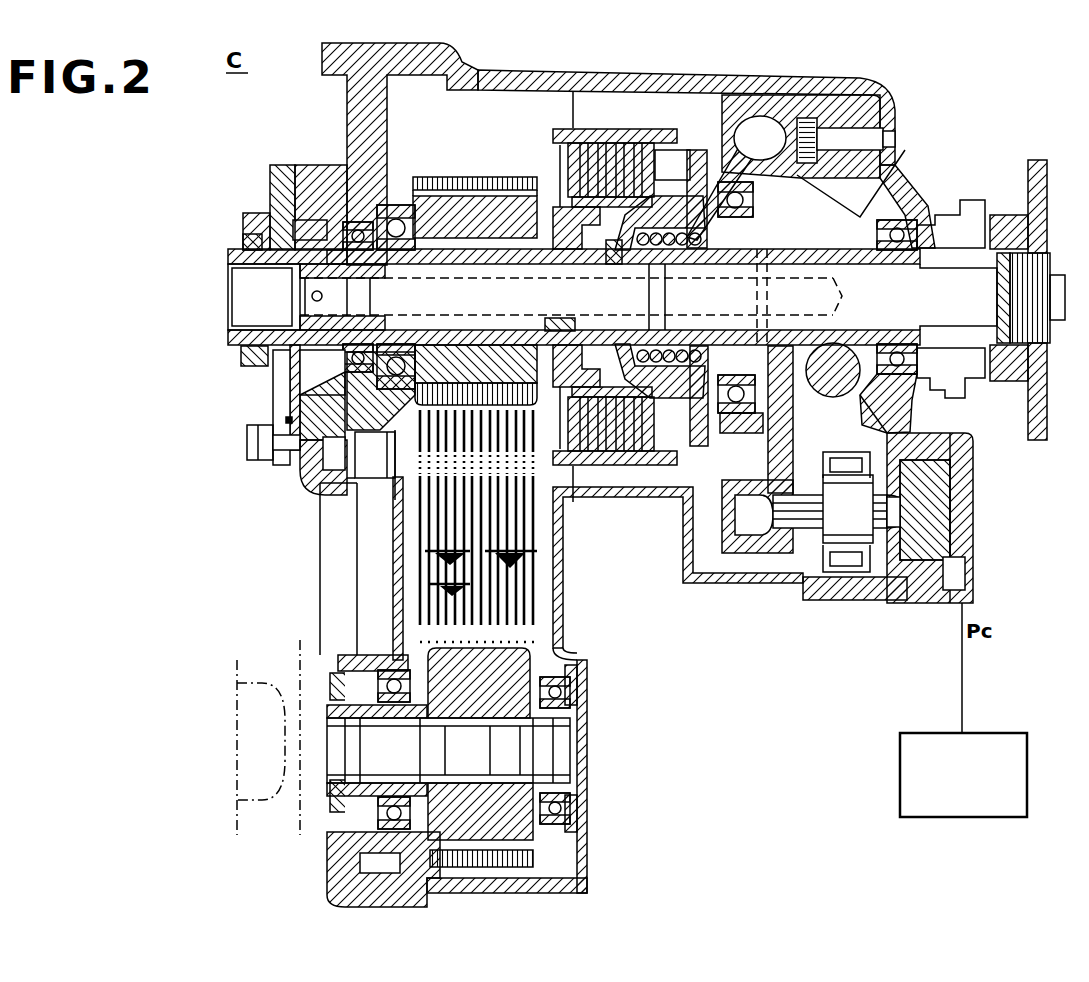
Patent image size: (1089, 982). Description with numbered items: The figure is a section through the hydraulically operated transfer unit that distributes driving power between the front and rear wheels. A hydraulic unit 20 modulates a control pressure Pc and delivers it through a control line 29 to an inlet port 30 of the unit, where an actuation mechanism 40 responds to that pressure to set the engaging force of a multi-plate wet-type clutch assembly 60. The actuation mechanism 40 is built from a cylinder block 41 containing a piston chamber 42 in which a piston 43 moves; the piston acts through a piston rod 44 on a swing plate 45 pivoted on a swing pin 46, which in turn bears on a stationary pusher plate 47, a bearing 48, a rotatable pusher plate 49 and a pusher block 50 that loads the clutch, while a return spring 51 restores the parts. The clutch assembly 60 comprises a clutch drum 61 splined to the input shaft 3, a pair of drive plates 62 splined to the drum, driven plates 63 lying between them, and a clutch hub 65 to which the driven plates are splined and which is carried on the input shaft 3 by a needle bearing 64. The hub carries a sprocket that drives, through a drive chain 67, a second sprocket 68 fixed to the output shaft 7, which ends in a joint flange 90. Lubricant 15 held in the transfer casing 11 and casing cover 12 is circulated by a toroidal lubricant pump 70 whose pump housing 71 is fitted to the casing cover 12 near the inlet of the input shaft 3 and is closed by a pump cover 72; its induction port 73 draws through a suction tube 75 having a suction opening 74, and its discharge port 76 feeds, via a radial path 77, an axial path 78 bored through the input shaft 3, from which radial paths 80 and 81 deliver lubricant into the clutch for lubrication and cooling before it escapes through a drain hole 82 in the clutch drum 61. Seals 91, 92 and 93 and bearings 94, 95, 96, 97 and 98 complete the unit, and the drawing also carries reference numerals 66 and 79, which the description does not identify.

The input shaft 3 is at (250, 246).
The output shaft 7 is at (327, 795).
The transfer casing 11 is at (519, 74).
The casing cover 12 is at (365, 56).
The lubricant 15 is at (540, 540).
The hydraulic unit 20 is at (900, 759).
The control line 29 is at (966, 648).
The inlet port 30 is at (967, 597).
The actuation mechanism 40 is at (734, 576).
The cylinder block 41 is at (972, 462).
The piston chamber 42 is at (955, 490).
The piston 43 is at (932, 552).
The piston rod 44 is at (787, 535).
The swing plate 45 is at (790, 422).
The swing pin 46 is at (772, 140).
The stationary pusher plate 47 is at (748, 432).
The bearing 48 is at (722, 378).
The rotatable pusher plate 49 is at (690, 95).
The pusher block 50 is at (697, 150).
The return spring 51 is at (693, 215).
The multi-plate wet-type clutch assembly 60 is at (618, 468).
The clutch drum 61 is at (668, 150).
The drive plates 62 is at (637, 128).
The driven plates 63 is at (657, 470).
The needle bearing 64 is at (612, 330).
The clutch hub 65 is at (500, 230).
The input shaft 66 is at (487, 246).
The drive chain 67 is at (418, 508).
The second sprocket 68 is at (565, 865).
The lubricant pump 70 is at (280, 205).
The pump housing 71 is at (333, 170).
The pump cover 72 is at (278, 165).
The induction port 73 is at (298, 380).
The suction opening 74 is at (358, 872).
The suction tube 75 is at (338, 506).
The discharge port 76 is at (312, 222).
The radial path 77 is at (230, 320).
The axial path 78 is at (392, 303).
The spline 79 is at (556, 325).
The radial path 80 is at (552, 264).
The radial path 81 is at (597, 264).
The drain hole 82 is at (571, 126).
The joint flange 90 is at (1012, 227).
The seal 91 is at (252, 356).
The seal 92 is at (946, 218).
The seal 93 is at (333, 815).
The bearing 94 is at (290, 400).
The bearing 95 is at (290, 452).
The bearing 96 is at (920, 392).
The bearing 97 is at (361, 568).
The bearing 98 is at (562, 652).